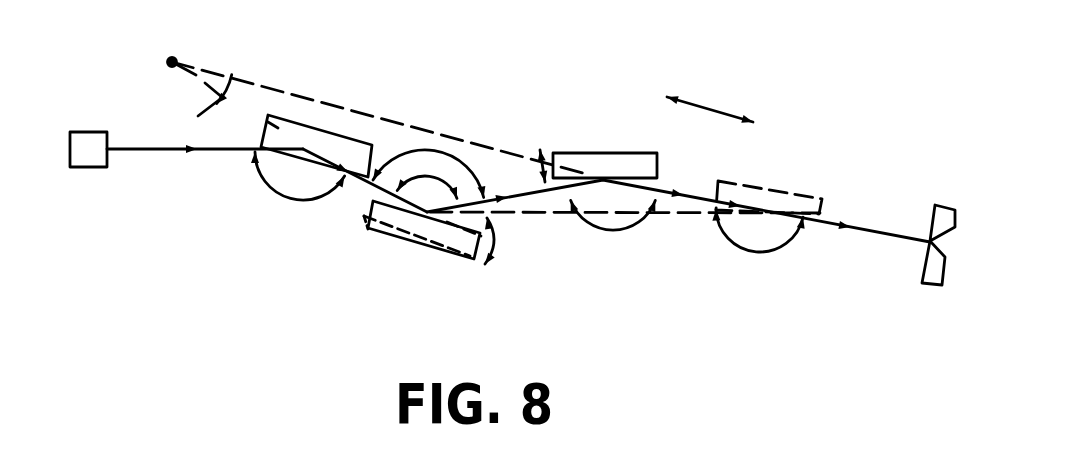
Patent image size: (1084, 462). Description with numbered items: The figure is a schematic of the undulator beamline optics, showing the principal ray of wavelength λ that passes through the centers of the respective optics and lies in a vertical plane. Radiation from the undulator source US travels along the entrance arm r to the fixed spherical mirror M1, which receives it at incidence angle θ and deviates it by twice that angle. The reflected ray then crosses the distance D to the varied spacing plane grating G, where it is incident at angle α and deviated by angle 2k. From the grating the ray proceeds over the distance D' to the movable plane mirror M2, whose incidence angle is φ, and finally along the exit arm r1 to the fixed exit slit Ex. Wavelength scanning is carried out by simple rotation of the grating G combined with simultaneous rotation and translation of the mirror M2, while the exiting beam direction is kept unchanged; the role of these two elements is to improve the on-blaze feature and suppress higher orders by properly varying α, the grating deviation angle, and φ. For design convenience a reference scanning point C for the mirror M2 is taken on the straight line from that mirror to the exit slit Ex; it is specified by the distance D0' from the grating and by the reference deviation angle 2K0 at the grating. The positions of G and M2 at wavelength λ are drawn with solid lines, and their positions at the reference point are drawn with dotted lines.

The undulator source US is at (84, 132).
The distance US-to-M1 r is at (164, 149).
The fixed spherical mirror M1 is at (320, 128).
The distance M1-to-G D is at (365, 201).
The varied spacing plane grating G is at (425, 245).
The angle M1GC 2K0 is at (409, 152).
The deviation angle of the grating 2k is at (454, 178).
The distance G-to-M2 D' is at (515, 147).
The distance G-to-C D0' is at (625, 254).
The movable plane mirror M2 is at (609, 152).
The exit arm r' r1 is at (872, 236).
The fixed exit slit Ex is at (938, 204).